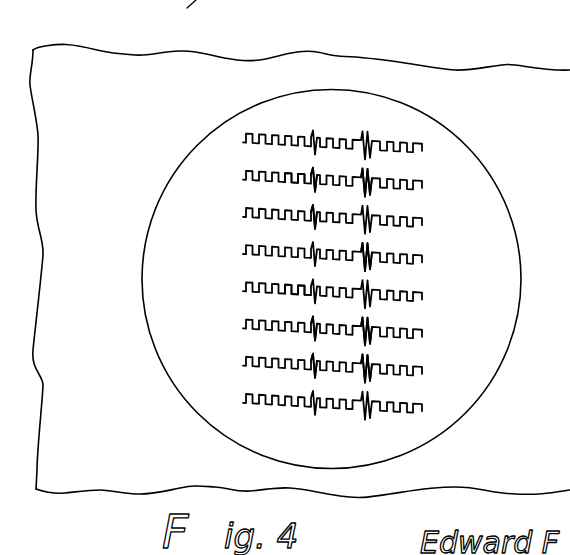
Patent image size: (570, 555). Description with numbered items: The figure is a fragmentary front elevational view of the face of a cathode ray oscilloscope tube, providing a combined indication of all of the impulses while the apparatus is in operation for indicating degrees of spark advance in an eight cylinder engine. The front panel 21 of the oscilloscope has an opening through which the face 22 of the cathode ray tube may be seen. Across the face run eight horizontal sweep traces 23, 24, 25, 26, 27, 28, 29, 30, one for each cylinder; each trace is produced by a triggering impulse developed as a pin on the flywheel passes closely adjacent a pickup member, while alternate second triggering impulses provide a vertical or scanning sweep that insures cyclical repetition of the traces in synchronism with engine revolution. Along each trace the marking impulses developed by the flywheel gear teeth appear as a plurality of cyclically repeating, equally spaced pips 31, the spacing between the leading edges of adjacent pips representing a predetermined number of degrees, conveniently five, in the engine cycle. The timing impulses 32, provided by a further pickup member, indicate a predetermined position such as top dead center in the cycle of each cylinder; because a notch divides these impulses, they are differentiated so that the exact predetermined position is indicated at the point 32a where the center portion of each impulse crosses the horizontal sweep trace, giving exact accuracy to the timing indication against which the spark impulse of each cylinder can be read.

The front panel 21 is at (139, 68).
The face 22 is at (315, 108).
The horizontal sweep trace 23 is at (243, 142).
The horizontal sweep trace 24 is at (243, 180).
The horizontal sweep trace 25 is at (243, 217).
The horizontal sweep trace 26 is at (243, 254).
The horizontal sweep trace 27 is at (243, 291).
The horizontal sweep trace 28 is at (243, 328).
The horizontal sweep trace 29 is at (243, 366).
The horizontal sweep trace 30 is at (243, 403).
The pips 31 is at (302, 176).
The timing impulses 32 is at (376, 253).
The point 32a is at (370, 194).